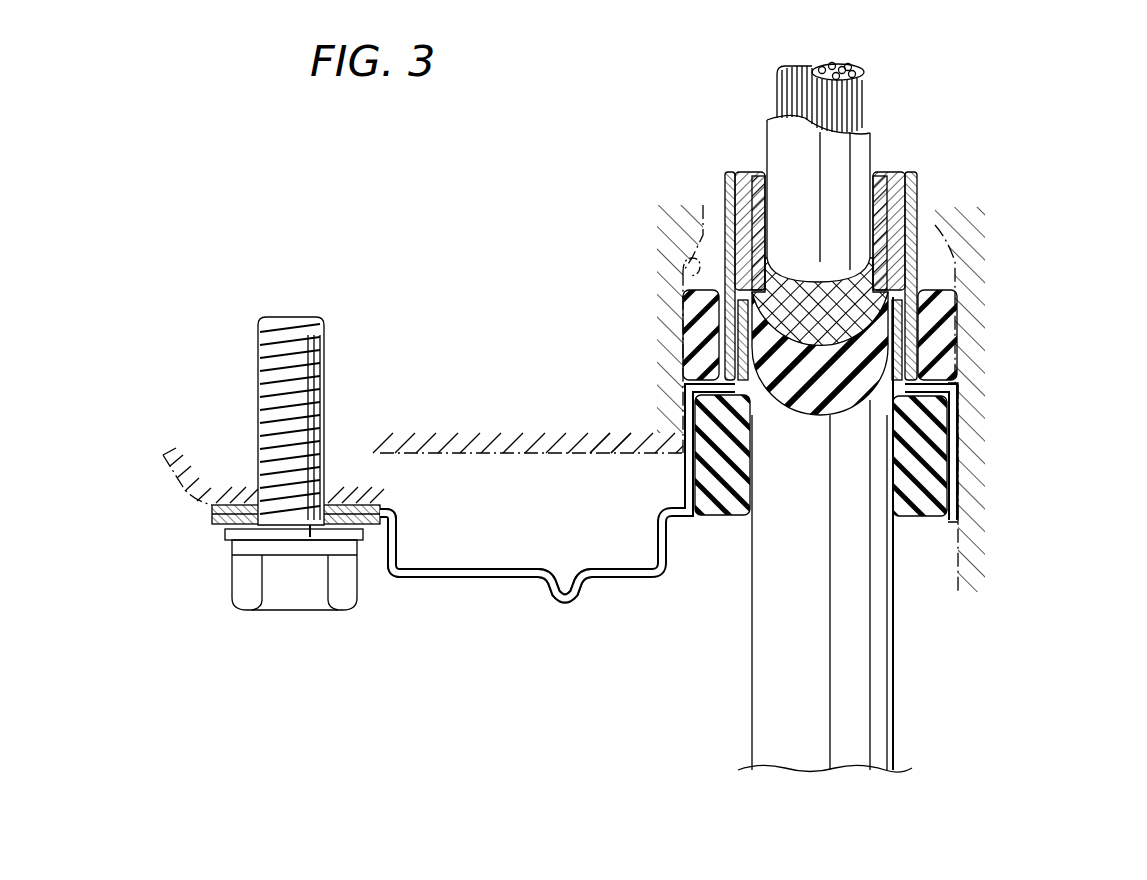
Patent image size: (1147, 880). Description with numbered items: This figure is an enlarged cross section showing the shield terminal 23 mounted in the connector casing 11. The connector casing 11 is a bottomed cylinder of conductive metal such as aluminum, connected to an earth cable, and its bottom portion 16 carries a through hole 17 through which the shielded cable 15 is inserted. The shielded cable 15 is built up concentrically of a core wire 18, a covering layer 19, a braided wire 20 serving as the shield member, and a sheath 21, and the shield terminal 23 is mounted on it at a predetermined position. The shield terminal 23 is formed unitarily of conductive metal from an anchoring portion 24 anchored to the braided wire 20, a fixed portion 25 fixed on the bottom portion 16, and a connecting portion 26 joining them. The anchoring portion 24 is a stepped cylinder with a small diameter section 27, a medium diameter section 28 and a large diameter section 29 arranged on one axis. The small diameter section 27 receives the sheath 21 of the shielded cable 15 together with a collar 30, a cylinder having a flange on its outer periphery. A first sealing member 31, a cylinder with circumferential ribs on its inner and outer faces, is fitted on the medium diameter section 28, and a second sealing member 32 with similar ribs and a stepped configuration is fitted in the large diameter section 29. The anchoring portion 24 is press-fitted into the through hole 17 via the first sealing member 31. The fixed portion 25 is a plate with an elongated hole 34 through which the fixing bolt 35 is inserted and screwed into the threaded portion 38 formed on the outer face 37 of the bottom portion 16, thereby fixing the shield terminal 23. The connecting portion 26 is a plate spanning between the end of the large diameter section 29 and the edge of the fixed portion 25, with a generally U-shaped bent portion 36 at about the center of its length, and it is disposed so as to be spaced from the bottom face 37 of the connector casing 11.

The connector casing 11 is at (462, 340).
The shielded cable 15 is at (877, 725).
The bottom portion 16 is at (548, 453).
The through hole 17 is at (683, 261).
The core wire 18 is at (850, 98).
The covering layer 19 is at (852, 153).
The braided wire 20 is at (752, 172).
The sheath 21 is at (877, 683).
The shield terminal 23 is at (582, 531).
The anchoring portion 24 is at (859, 350).
The fixed portion 25 is at (373, 545).
The connecting portion 26 is at (455, 578).
The small diameter section 27 is at (974, 276).
The medium diameter section 28 is at (955, 322).
The large diameter section 29 is at (953, 474).
The collar 30 is at (727, 240).
The first sealing member 31 is at (680, 342).
The second sealing member 32 is at (917, 508).
The elongated hole 34 is at (297, 529).
The fixing bolt 35 is at (300, 588).
The bent portion 36 is at (570, 600).
The outer face 37 is at (598, 453).
The threaded portion 38 is at (262, 386).